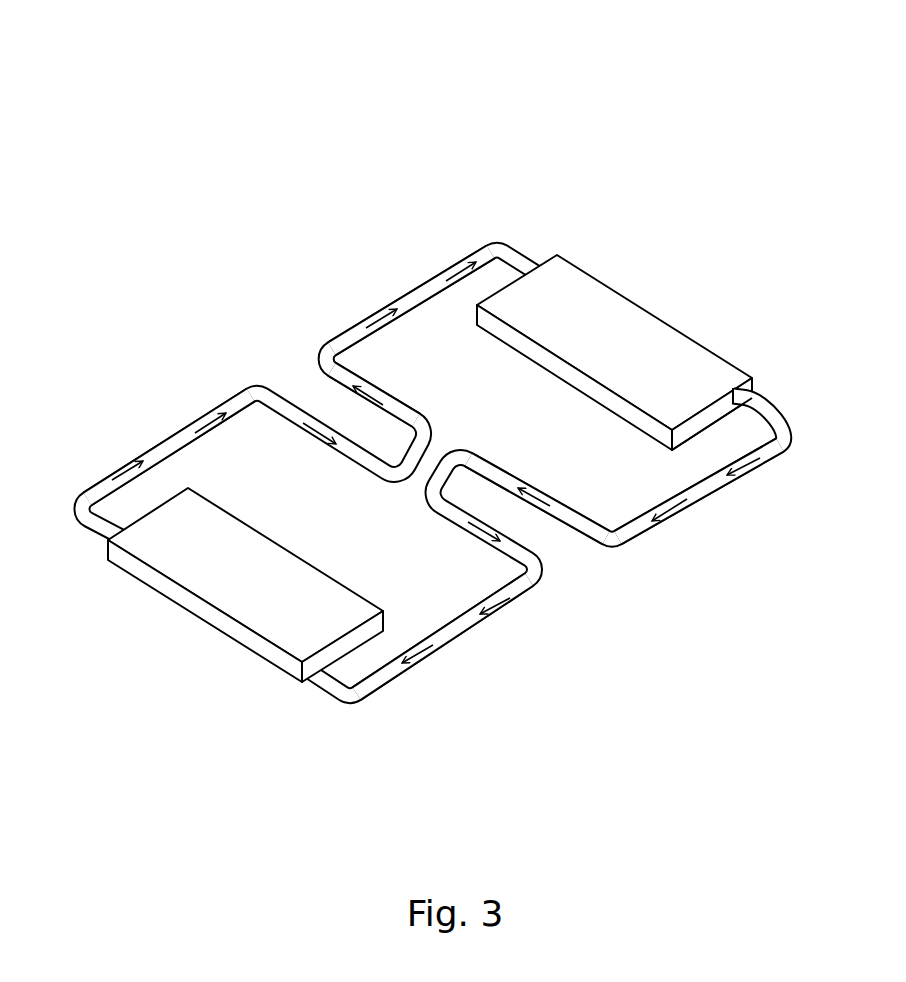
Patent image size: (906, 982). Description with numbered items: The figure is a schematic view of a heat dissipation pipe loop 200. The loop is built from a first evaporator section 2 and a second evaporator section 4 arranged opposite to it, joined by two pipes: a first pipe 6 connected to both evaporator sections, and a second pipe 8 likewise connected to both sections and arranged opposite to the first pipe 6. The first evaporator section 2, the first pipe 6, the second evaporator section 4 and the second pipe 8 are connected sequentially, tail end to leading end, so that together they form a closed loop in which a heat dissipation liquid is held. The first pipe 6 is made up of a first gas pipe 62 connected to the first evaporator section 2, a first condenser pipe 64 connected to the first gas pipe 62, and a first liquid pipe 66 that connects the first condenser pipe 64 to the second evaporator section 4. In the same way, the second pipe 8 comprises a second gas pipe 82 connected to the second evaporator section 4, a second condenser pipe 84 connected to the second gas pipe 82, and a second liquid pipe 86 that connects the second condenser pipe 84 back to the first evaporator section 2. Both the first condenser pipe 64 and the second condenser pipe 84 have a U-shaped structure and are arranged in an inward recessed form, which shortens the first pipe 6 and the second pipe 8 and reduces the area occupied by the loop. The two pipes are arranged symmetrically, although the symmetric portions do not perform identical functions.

The heat dissipation pipe loop 200 is at (482, 52).
The first evaporator section 2 is at (167, 583).
The second evaporator section 4 is at (650, 338).
The first pipe 6 is at (326, 372).
The first gas pipe 62 is at (158, 445).
The first condenser pipe 64 is at (410, 456).
The first liquid pipe 66 is at (409, 279).
The second pipe 8 is at (532, 549).
The second gas pipe 82 is at (708, 487).
The second condenser pipe 84 is at (450, 470).
The second liquid pipe 86 is at (443, 641).